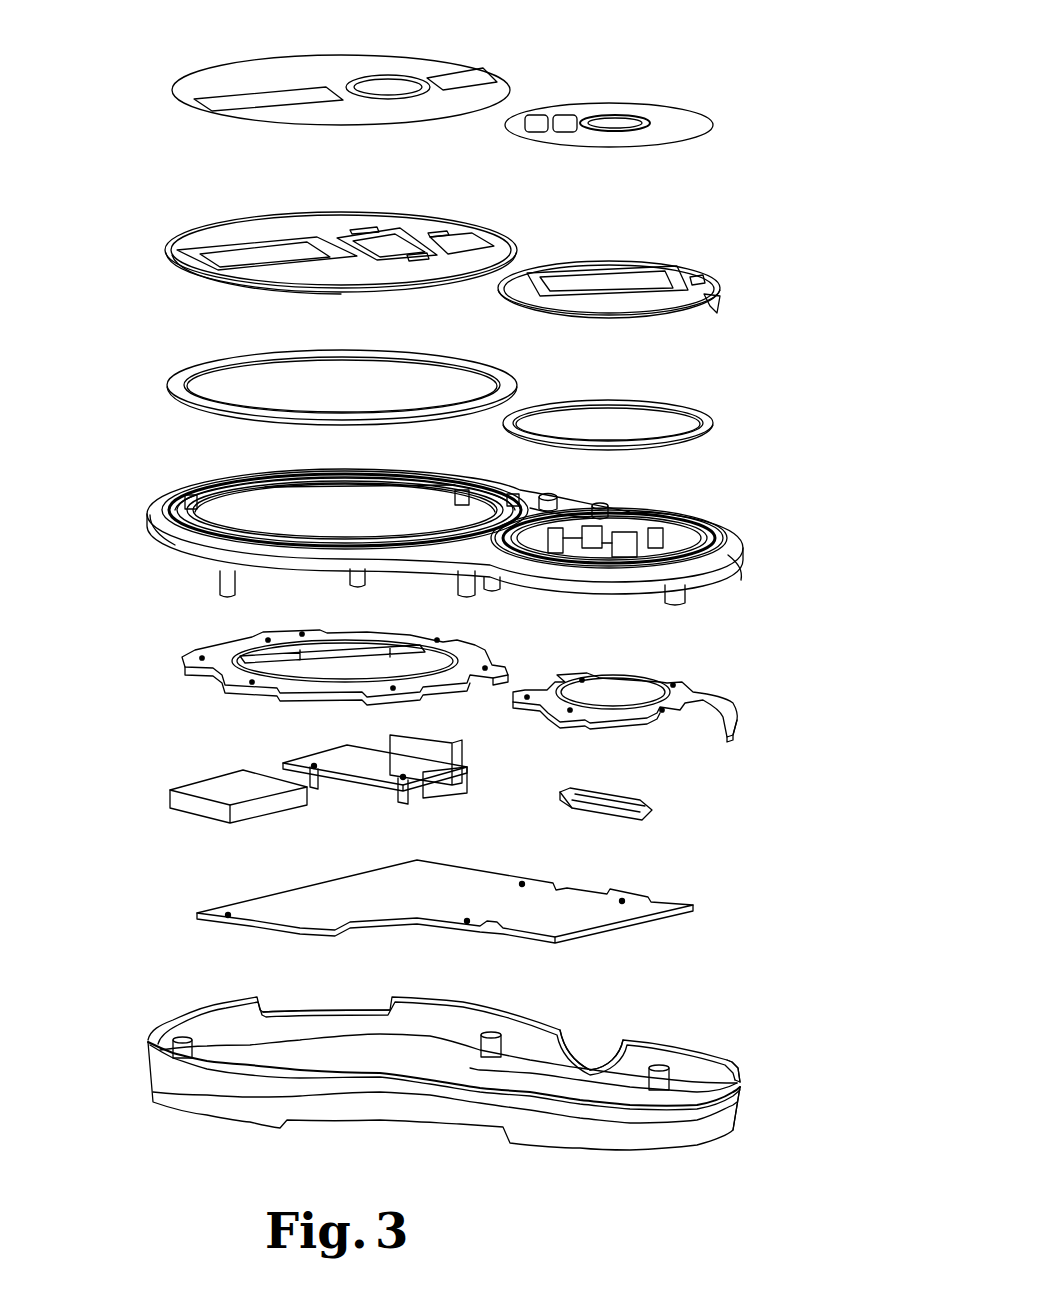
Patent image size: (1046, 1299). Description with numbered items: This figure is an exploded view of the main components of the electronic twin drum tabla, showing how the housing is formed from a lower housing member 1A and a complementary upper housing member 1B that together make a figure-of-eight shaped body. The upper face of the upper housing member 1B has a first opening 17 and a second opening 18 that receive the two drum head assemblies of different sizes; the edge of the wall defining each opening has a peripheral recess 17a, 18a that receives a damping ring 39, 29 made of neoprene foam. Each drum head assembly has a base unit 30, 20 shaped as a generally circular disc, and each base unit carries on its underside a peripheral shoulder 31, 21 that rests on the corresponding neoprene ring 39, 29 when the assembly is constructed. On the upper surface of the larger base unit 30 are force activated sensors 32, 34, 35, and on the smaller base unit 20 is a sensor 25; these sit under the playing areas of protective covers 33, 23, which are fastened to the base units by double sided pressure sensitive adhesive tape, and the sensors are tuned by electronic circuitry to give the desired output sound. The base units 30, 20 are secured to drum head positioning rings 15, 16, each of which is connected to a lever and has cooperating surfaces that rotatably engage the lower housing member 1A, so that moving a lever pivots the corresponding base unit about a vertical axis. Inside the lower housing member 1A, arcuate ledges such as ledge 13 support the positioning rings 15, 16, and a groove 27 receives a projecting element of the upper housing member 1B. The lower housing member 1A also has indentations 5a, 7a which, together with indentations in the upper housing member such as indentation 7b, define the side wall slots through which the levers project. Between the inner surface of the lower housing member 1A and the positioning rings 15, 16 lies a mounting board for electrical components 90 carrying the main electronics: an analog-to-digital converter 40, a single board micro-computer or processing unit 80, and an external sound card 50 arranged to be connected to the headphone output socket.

The protective cover 33 is at (228, 75).
The protective cover 23 is at (668, 120).
The base unit 30 is at (158, 232).
The sensor 35 is at (257, 252).
The sensor 34 is at (463, 242).
The peripheral shoulder 31 is at (187, 268).
The sensor 32 is at (415, 256).
The base unit 20 is at (740, 277).
The sensor 25 is at (607, 287).
The peripheral shoulder 21 is at (687, 300).
The damping ring 39 is at (172, 384).
The damping ring 29 is at (713, 418).
The upper housing member 1B is at (758, 550).
The indentation 7b is at (243, 478).
The first opening 17 is at (287, 517).
The peripheral recess 17a is at (170, 528).
The second opening 18 is at (617, 540).
The peripheral recess 18a is at (732, 572).
The drum head positioning ring 15 is at (193, 657).
The drum head positioning ring 16 is at (717, 702).
The single board micro-computer 80 is at (337, 753).
The analog-to-digital converter 40 is at (218, 785).
The external sound card 50 is at (652, 798).
The mounting board for electrical components 90 is at (580, 920).
The arcuate ledge 13 is at (165, 1027).
The indentation 7a is at (315, 1005).
The groove 27 is at (590, 1060).
The indentation 5a is at (738, 1083).
The lower housing member 1A is at (747, 1110).